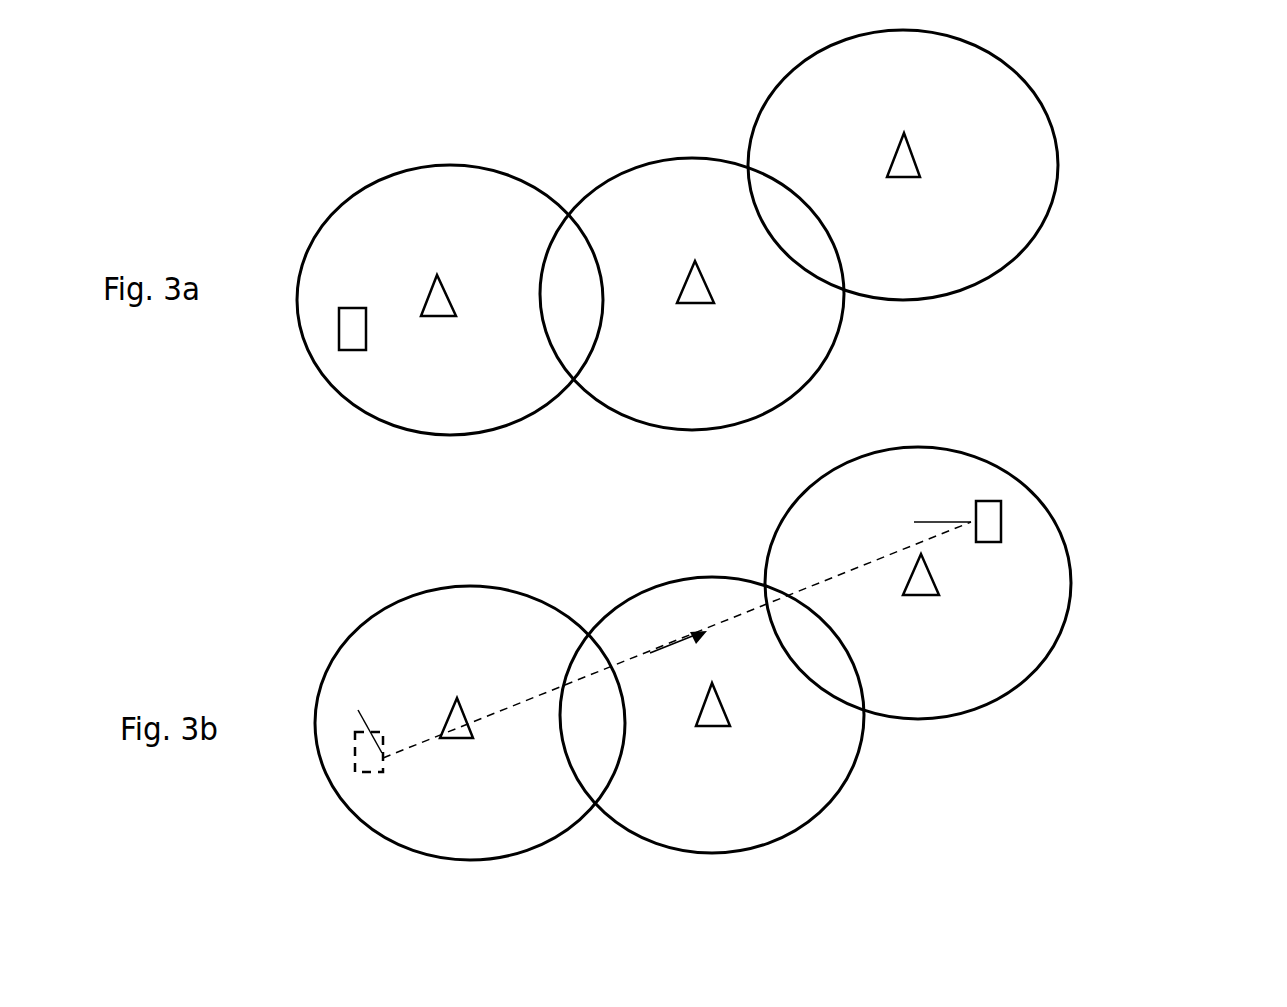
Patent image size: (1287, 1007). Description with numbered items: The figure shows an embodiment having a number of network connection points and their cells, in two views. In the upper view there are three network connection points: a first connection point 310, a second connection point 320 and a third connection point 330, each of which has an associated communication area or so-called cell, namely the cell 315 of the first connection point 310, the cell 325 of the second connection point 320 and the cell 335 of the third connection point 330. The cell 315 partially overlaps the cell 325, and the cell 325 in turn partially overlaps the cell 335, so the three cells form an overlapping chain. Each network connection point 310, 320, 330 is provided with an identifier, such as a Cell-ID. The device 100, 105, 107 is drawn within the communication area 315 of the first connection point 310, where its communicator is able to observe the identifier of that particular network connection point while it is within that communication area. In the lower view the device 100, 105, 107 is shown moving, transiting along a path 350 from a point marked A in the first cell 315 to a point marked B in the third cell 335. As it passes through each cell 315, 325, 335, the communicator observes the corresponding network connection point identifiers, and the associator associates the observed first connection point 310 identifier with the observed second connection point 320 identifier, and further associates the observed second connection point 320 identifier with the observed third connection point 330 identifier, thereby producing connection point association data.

In FIG. 3A, the device 100 is at (288, 393).
In FIG. 3B, the device 100 is at (1122, 547).
In FIG. 3A, the device 105 is at (352, 329).
In FIG. 3B, the device 105 is at (988, 521).
In FIG. 3A, the device 107 is at (352, 328).
In FIG. 3B, the device 107 is at (989, 522).
In FIG. 3A, the first network connection point 310 is at (438, 277).
In FIG. 3B, the first network connection point 310 is at (456, 698).
In FIG. 3A, the communication area/cell of the first connection point 315 is at (413, 233).
In FIG. 3B, the communication area/cell of the first connection point 315 is at (432, 657).
In FIG. 3A, the second network connection point 320 is at (700, 272).
In FIG. 3B, the second network connection point 320 is at (714, 702).
In FIG. 3A, the communication area/cell of the second connection point 325 is at (667, 222).
In FIG. 3B, the communication area/cell of the second connection point 325 is at (631, 620).
In FIG. 3A, the third network connection point 330 is at (910, 159).
In FIG. 3B, the third network connection point 330 is at (935, 586).
In FIG. 3A, the communication area/cell of the third connection point 335 is at (961, 83).
In FIG. 3B, the communication area/cell of the third connection point 335 is at (981, 499).
In FIG. 3B, the path 350 is at (830, 588).